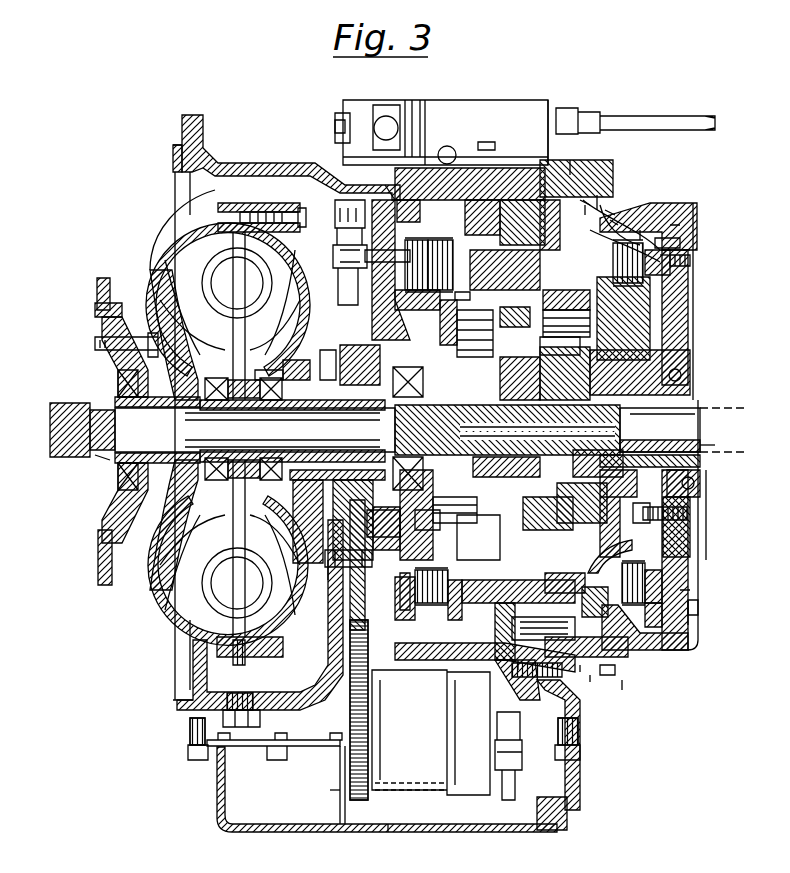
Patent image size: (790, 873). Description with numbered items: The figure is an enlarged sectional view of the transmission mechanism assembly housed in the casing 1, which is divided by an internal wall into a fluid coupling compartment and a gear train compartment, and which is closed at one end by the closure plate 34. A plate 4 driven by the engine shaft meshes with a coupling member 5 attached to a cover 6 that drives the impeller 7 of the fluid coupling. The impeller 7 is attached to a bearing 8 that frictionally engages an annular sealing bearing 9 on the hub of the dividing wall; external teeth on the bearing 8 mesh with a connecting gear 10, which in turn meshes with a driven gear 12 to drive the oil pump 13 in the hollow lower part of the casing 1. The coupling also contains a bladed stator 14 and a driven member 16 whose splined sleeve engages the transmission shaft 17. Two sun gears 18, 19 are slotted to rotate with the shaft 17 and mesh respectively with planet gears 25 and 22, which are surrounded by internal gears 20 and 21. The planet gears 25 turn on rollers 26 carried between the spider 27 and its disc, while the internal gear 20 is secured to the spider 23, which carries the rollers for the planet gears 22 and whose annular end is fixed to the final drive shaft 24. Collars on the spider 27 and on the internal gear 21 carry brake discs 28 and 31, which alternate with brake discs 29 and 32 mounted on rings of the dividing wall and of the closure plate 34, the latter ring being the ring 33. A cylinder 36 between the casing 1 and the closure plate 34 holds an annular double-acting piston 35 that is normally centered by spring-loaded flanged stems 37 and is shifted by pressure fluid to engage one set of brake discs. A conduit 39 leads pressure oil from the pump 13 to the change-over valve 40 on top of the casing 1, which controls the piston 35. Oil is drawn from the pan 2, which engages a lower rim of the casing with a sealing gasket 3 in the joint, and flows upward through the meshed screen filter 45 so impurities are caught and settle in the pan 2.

The casing 1 is at (203, 123).
The oil pan 2 is at (336, 828).
The sealing gasket 3 is at (193, 748).
The plate 4 is at (103, 553).
The coupling member 5 is at (115, 508).
The cover 6 is at (165, 268).
The impeller 7 is at (345, 125).
The bearing 8 is at (293, 490).
The annular sealing bearing 9 is at (326, 350).
The connecting gear 10 is at (340, 640).
The driven gear 12 is at (358, 718).
The oil pump 13 is at (437, 795).
The stator 14 is at (275, 315).
The driven member 16 is at (183, 335).
The transmission shaft 17 is at (190, 430).
The sun gear 18 is at (520, 485).
The sun gear 19 is at (660, 507).
The internal gear 20 is at (470, 567).
The internal gear 21 is at (640, 655).
The planet gears 22 is at (580, 340).
The spider 23 is at (640, 372).
The final drive shaft 24 is at (748, 405).
The planet gears 25 is at (500, 370).
The pin-supported rollers 26 is at (585, 310).
The spider 27 is at (478, 544).
The brake discs 28 is at (412, 240).
The brake discs 29 is at (438, 240).
The brake discs 31 is at (698, 614).
The brake discs 32 is at (672, 240).
The ring 33 is at (690, 252).
The closure plate 34 is at (668, 258).
The piston 35 is at (615, 220).
The cylinder 36 is at (620, 230).
The flanged stem 37 is at (612, 672).
The conduit 39 is at (393, 190).
The change-over valve 40 is at (437, 130).
The meshed metal screen filter 45 is at (262, 746).